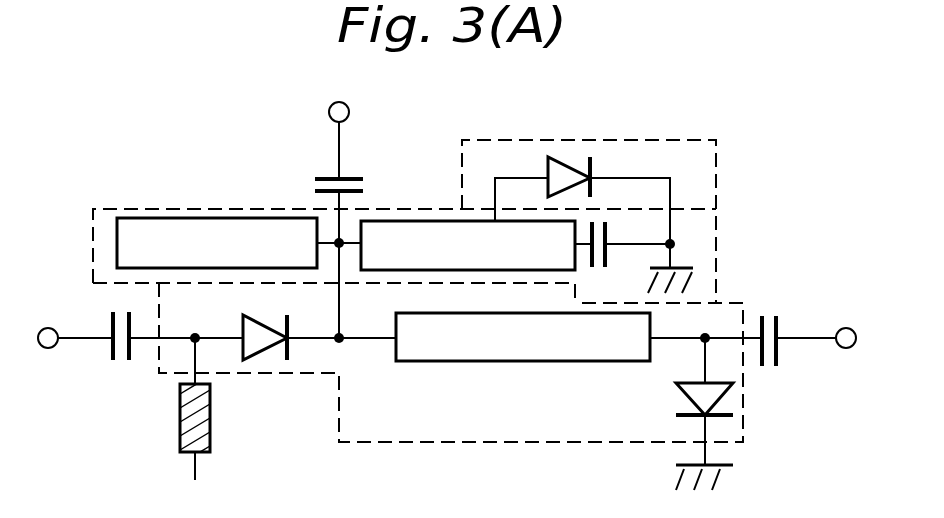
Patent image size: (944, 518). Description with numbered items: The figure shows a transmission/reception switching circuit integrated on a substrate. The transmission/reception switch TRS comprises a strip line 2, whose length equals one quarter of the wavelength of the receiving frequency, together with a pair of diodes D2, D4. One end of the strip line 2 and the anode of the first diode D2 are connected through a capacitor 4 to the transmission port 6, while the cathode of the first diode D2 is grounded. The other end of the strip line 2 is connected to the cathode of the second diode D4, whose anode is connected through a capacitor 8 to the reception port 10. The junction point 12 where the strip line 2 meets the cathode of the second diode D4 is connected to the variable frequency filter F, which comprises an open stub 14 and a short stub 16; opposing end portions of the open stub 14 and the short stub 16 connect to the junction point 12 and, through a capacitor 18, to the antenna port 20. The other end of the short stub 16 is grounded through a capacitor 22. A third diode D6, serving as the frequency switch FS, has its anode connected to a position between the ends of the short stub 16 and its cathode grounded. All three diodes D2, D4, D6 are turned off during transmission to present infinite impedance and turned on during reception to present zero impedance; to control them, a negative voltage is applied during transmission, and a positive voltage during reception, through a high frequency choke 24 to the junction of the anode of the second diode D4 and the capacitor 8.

The strip line 2 is at (516, 362).
The capacitor 4 is at (766, 314).
The transmission port 6 is at (846, 349).
The capacitor 8 is at (128, 362).
The reception port 10 is at (50, 348).
The junction point 12 is at (342, 346).
The open stub 14 is at (136, 217).
The short stub 16 is at (408, 220).
The capacitor 18 is at (313, 184).
The antenna port 20 is at (328, 112).
The capacitor 22 is at (607, 258).
The high frequency choke 24 is at (180, 443).
The first diode D2 is at (678, 392).
The second diode D4 is at (248, 313).
The third diode D6 is at (565, 158).
The variable frequency filter F is at (716, 233).
The frequency switch FS is at (716, 168).
The transmission/reception switch TRS is at (482, 444).